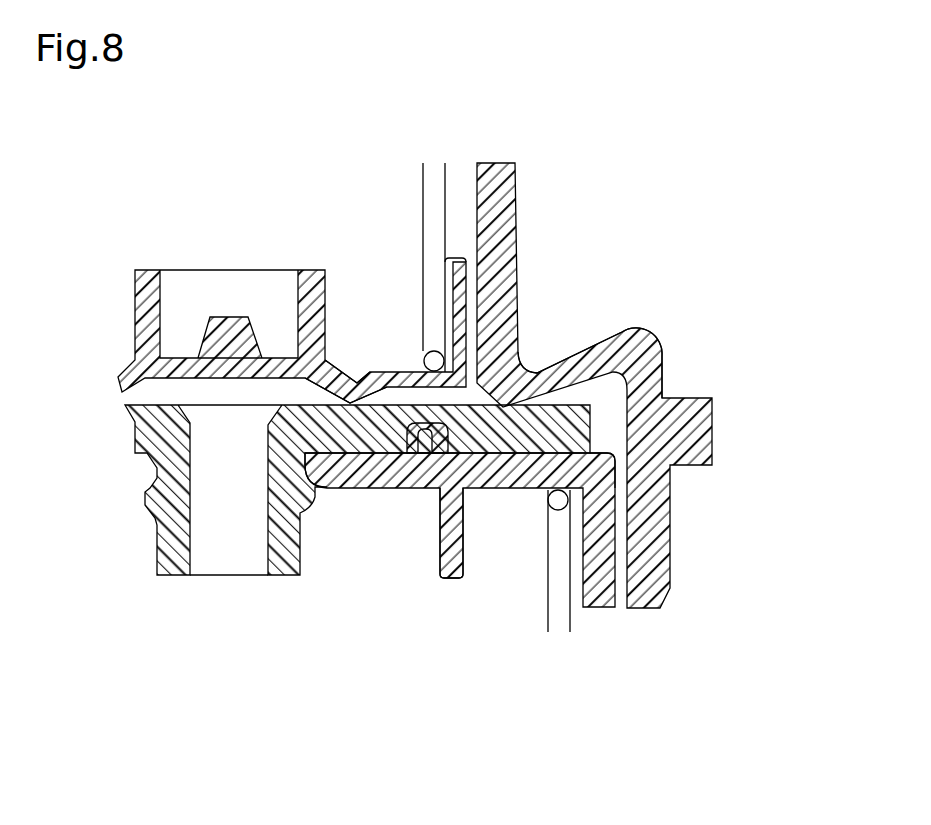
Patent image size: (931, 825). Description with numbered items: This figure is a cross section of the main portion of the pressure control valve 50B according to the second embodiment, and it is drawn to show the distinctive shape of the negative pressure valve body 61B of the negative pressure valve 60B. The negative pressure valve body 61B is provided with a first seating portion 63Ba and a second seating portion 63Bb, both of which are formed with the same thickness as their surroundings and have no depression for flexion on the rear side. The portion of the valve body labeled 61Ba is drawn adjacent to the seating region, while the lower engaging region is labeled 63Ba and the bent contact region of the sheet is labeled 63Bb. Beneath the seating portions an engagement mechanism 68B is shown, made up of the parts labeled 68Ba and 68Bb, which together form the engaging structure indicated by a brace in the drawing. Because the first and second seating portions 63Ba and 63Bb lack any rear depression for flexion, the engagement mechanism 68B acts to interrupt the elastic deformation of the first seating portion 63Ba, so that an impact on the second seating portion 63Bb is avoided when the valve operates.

The negative pressure valve 60B is at (126, 445).
The pressure control valve 50B is at (297, 484).
The negative pressure valve body 61B is at (636, 385).
The flange portion of shaft member 61Ba is at (470, 407).
The first seating portion 63Ba is at (575, 458).
The second seating portion 63Bb is at (358, 400).
The engagement mechanism 68B is at (496, 590).
The pin 68Ba is at (407, 456).
The leg portion 68Bb is at (437, 490).